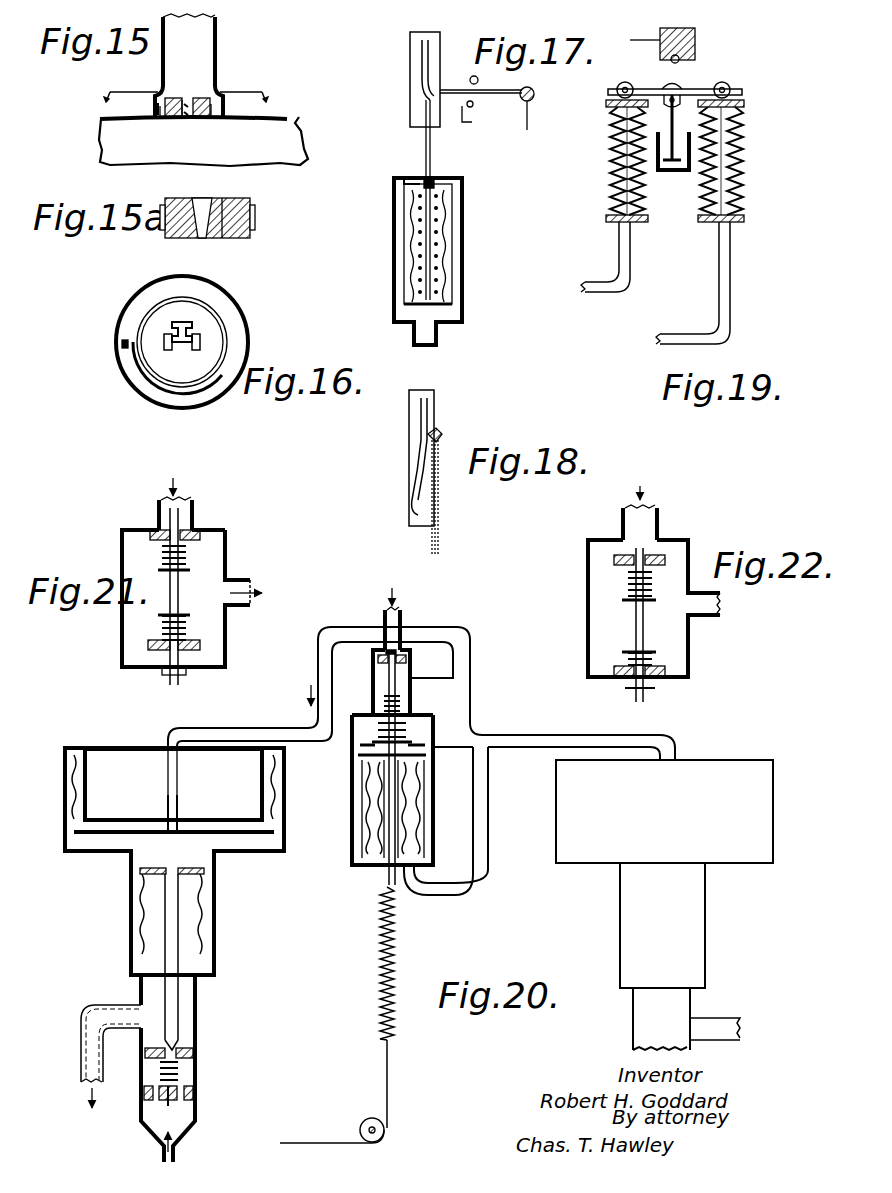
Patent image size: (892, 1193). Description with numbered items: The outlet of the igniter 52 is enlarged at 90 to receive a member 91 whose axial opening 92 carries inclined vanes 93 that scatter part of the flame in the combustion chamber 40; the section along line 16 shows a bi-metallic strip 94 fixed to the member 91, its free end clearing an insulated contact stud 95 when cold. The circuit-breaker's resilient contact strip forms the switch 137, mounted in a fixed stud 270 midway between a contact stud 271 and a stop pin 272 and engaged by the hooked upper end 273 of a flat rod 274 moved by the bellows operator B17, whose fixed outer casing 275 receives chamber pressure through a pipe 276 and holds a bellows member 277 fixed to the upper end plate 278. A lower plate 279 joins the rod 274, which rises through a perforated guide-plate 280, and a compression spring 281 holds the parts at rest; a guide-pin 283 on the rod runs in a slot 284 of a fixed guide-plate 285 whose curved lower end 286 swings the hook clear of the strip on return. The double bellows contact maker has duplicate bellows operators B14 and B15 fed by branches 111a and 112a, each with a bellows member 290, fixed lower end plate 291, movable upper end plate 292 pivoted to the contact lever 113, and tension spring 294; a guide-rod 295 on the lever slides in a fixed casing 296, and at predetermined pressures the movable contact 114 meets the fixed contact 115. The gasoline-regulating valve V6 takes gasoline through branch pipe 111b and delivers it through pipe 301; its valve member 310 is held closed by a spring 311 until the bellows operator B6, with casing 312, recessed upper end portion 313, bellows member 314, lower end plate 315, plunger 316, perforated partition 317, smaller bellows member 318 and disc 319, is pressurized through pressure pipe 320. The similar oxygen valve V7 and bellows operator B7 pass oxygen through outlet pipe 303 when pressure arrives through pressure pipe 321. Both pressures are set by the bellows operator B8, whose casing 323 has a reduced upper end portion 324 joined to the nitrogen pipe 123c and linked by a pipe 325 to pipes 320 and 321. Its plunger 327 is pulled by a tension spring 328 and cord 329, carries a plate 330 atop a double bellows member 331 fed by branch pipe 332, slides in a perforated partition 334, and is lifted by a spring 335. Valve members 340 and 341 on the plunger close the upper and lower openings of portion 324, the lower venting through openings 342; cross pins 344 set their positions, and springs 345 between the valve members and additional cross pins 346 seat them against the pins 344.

In FIG. 15, the igniter 52 is at (218, 44).
In FIG. 15, the combustion chamber 40 is at (279, 139).
In FIG. 15, the spiral or inclined vanes 93 is at (181, 98).
In FIG. 15A, the spiral or inclined vanes 93 is at (197, 205).
In FIG. 16, the spiral or inclined vanes 93 is at (172, 342).
In FIG. 15, the enlarged end portion 90 is at (156, 106).
In FIG. 16, the enlarged end portion 90 is at (134, 294).
In FIG. 15, the member 91 is at (182, 118).
In FIG. 15A, the member 91 is at (255, 230).
In FIG. 16, the member 91 is at (204, 320).
In FIG. 15, the insulated contact stud 95 is at (160, 116).
In FIG. 16, the insulated contact stud 95 is at (122, 348).
In FIG. 15, the bi-metallic strip 94 is at (213, 118).
In FIG. 16, the bi-metallic strip 94 is at (180, 390).
In FIG. 15, the section line 16 is at (189, 83).
In FIG. 15A, the axial opening 92 is at (215, 200).
In FIG. 16, the axial opening 92 is at (192, 350).
In FIG. 17, the hooked upper end 273 is at (424, 108).
In FIG. 17, the flat rod 274 is at (431, 146).
In FIG. 18, the flat rod 274 is at (439, 537).
In FIG. 17, the switch 137 is at (500, 94).
In FIG. 17, the fixed stud 270 is at (532, 96).
In FIG. 17, the stop pin 272 is at (463, 70).
In FIG. 17, the contact stud 271 is at (465, 113).
In FIG. 17, the fixed outer casing 275 is at (394, 242).
In FIG. 17, the bellows member 277 is at (405, 270).
In FIG. 17, the compression spring 281 is at (418, 212).
In FIG. 17, the upper end plate 278 is at (404, 178).
In FIG. 17, the perforated guide-plate 280 is at (435, 182).
In FIG. 17, the plate 279 is at (410, 312).
In FIG. 17, the pipe 276 is at (437, 340).
In FIG. 17, the bellows operator B17 is at (463, 262).
In FIG. 18, the fixed guide-plate 285 is at (410, 428).
In FIG. 18, the slot 284 is at (428, 404).
In FIG. 18, the guide-pin 283 is at (432, 440).
In FIG. 18, the curved lower end of slot 286 is at (412, 512).
In FIG. 19, the fixed contact 115 is at (683, 66).
In FIG. 19, the contact lever 113 is at (700, 88).
In FIG. 19, the movable contact 114 is at (662, 86).
In FIG. 19, the guide-rod 295 is at (689, 127).
In FIG. 19, the fixed casing 296 is at (680, 170).
In FIG. 19, the movable upper end plate 292 is at (608, 104).
In FIG. 19, the bellows member 290 is at (614, 132).
In FIG. 19, the tension spring 294 is at (622, 192).
In FIG. 19, the fixed lower end plate 291 is at (608, 222).
In FIG. 19, the branch pipe 111a is at (630, 262).
In FIG. 19, the branch pipe 112a is at (715, 320).
In FIG. 19, the bellows operator B14 is at (612, 170).
In FIG. 19, the bellows operator B15 is at (744, 160).
In FIG. 21, the reduced upper end portion 324 is at (124, 668).
In FIG. 22, the reduced upper end portion 324 is at (588, 615).
In FIG. 20, the reduced upper end portion 324 is at (373, 684).
In FIG. 21, the branch pipe 123c is at (195, 505).
In FIG. 22, the branch pipe 123c is at (657, 525).
In FIG. 20, the branch pipe 123c is at (402, 618).
In FIG. 21, the cross pins 344 is at (190, 532).
In FIG. 22, the cross pins 344 is at (650, 556).
In FIG. 21, the plunger 327 is at (172, 680).
In FIG. 22, the plunger 327 is at (640, 702).
In FIG. 20, the plunger 327 is at (388, 880).
In FIG. 21, the springs 345 is at (186, 556).
In FIG. 22, the springs 345 is at (628, 585).
In FIG. 20, the springs 345 is at (384, 702).
In FIG. 21, the additional cross pins 346 is at (160, 572).
In FIG. 22, the additional cross pins 346 is at (646, 604).
In FIG. 21, the valve member 341 is at (200, 650).
In FIG. 22, the valve member 341 is at (614, 670).
In FIG. 21, the valve member 340 is at (150, 538).
In FIG. 22, the valve member 340 is at (618, 560).
In FIG. 20, the valve member 340 is at (406, 660).
In FIG. 21, the pipe 325 is at (248, 578).
In FIG. 22, the pipe 325 is at (700, 618).
In FIG. 20, the pipe 325 is at (422, 690).
In FIG. 20, the bellows operator B6 is at (62, 852).
In FIG. 20, the recessed upper end portion 313 is at (173, 785).
In FIG. 20, the bellows member 314 is at (74, 786).
In FIG. 20, the plunger 316 is at (170, 860).
In FIG. 20, the movable lower end plate 315 is at (236, 836).
In FIG. 20, the casing 312 is at (216, 900).
In FIG. 20, the bellows member 318 is at (142, 926).
In FIG. 20, the perforated partition 317 is at (198, 968).
In FIG. 20, the disc 319 is at (142, 876).
In FIG. 20, the gasoline-regulating valve V6 is at (198, 1000).
In FIG. 20, the pipe 301 is at (86, 1052).
In FIG. 20, the valve member 310 is at (190, 1046).
In FIG. 20, the spring 311 is at (180, 1072).
In FIG. 20, the branch pipe 111b is at (178, 1152).
In FIG. 20, the pressure pipe 320 is at (270, 730).
In FIG. 20, the pressure pipe 321 is at (548, 737).
In FIG. 20, the openings 342 is at (433, 734).
In FIG. 20, the bellows operator B8 is at (352, 856).
In FIG. 20, the spring 335 is at (406, 737).
In FIG. 20, the perforated partition 334 is at (372, 744).
In FIG. 20, the plate 330 is at (426, 768).
In FIG. 20, the casing 323 is at (362, 818).
In FIG. 20, the double bellows member 331 is at (410, 798).
In FIG. 20, the branch pipe 332 is at (478, 846).
In FIG. 20, the tension spring 328 is at (382, 950).
In FIG. 20, the cord 329 is at (389, 1110).
In FIG. 20, the bellows operator B7 is at (557, 836).
In FIG. 20, the oxygen valve V7 is at (632, 1028).
In FIG. 20, the outlet pipe 303 is at (728, 1020).